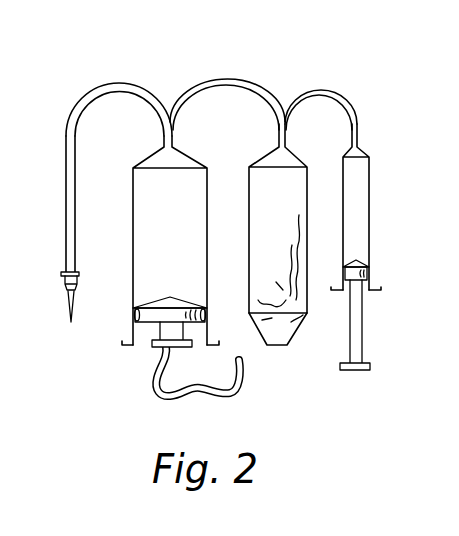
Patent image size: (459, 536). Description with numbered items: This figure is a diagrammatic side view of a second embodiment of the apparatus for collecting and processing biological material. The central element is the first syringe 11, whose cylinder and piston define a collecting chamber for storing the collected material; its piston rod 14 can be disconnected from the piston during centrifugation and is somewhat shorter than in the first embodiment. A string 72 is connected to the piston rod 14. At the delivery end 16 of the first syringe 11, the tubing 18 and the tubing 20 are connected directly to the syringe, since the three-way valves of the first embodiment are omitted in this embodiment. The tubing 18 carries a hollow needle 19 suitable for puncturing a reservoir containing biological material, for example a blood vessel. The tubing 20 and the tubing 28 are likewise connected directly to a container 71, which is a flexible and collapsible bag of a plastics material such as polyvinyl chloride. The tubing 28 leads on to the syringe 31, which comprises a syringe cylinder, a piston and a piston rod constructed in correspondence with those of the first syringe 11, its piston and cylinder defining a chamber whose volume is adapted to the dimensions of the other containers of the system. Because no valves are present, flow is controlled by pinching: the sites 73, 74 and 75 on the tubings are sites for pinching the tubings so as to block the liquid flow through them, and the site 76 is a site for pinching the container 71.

The first syringe 11 is at (155, 358).
The piston rod 14 is at (156, 344).
The delivery end 16 is at (171, 276).
The tubing 18 is at (107, 213).
The hollow needle 19 is at (71, 324).
The tubing 20 is at (227, 86).
The tubing 28 is at (369, 260).
The syringe 31 is at (355, 379).
The container 71 is at (292, 267).
The string 72 is at (174, 397).
The pinching site 73 is at (115, 98).
The pinching site 74 is at (224, 98).
The pinching site 75 is at (317, 108).
The pinching site 76 is at (307, 313).